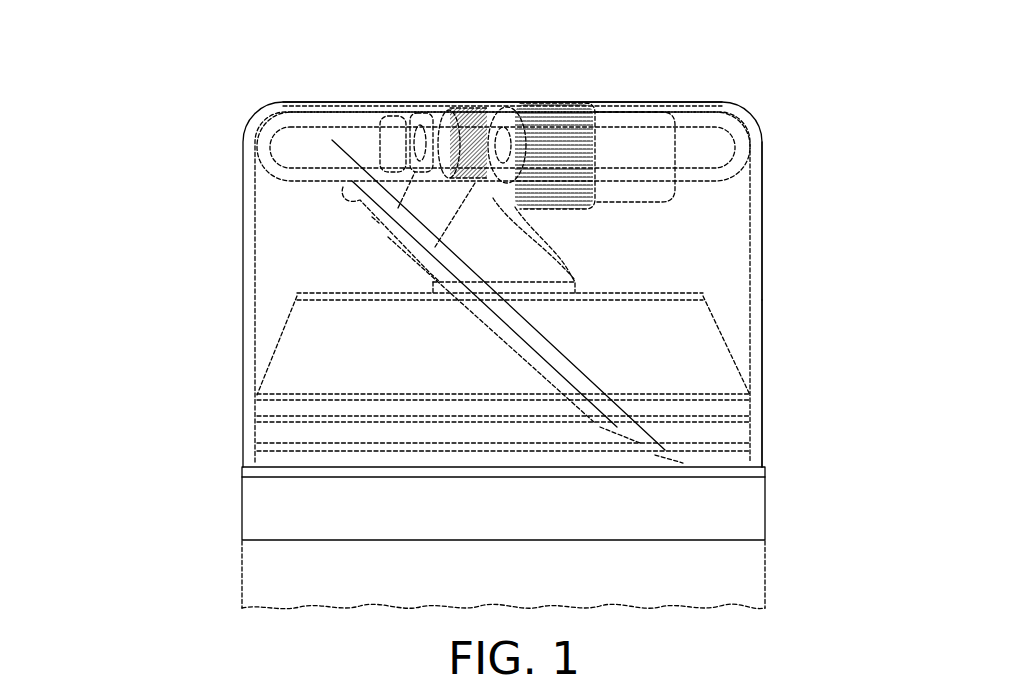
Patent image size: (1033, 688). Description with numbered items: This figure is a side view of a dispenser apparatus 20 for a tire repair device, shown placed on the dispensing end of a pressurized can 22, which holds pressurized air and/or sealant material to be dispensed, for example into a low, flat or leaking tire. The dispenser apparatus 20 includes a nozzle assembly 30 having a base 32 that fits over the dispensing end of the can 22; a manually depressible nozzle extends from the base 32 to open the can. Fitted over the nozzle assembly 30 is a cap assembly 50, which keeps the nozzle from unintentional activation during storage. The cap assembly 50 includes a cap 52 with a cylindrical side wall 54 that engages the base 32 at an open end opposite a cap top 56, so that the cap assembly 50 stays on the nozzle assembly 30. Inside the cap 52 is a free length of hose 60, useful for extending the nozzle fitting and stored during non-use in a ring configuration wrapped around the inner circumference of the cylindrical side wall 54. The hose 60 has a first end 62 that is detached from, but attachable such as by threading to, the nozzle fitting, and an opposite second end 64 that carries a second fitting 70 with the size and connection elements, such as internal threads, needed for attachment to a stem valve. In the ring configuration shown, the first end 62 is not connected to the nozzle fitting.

The dispenser apparatus 20 is at (796, 313).
The pressurized can 22 is at (765, 574).
The nozzle assembly 30 is at (244, 508).
The base 32 is at (765, 500).
The cap assembly 50 is at (244, 238).
The cap 52 is at (764, 243).
The cylindrical side wall 54 is at (765, 369).
The cap top 56 is at (712, 101).
The free length of hose 60 is at (758, 142).
The first end 62 is at (470, 110).
The second end 64 is at (638, 100).
The second fitting 70 is at (556, 110).